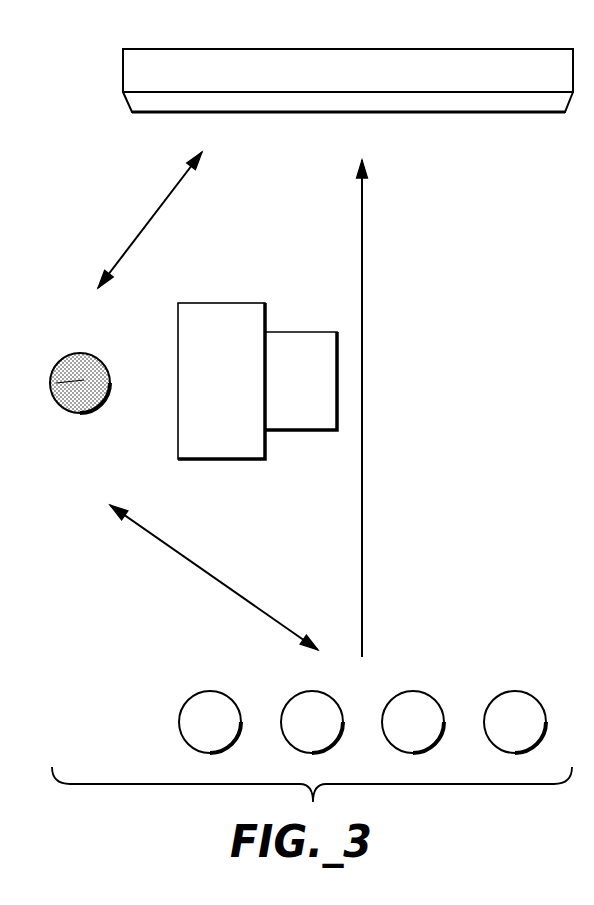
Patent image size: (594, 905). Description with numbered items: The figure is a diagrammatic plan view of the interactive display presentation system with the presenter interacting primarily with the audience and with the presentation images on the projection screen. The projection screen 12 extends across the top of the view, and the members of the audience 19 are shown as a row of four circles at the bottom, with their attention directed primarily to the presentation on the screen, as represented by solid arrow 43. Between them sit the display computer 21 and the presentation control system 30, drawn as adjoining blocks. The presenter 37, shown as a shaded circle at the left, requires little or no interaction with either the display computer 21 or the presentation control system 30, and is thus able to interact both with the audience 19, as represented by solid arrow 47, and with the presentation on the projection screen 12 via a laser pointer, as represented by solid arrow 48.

The projection screen 12 is at (182, 47).
The audience 19 is at (477, 670).
The display computer 21 is at (307, 331).
The presentation control system 30 is at (233, 302).
The presenter 37 is at (85, 413).
The solid arrow 43 is at (362, 258).
The solid arrow 47 is at (178, 552).
The solid arrow 48 is at (158, 207).